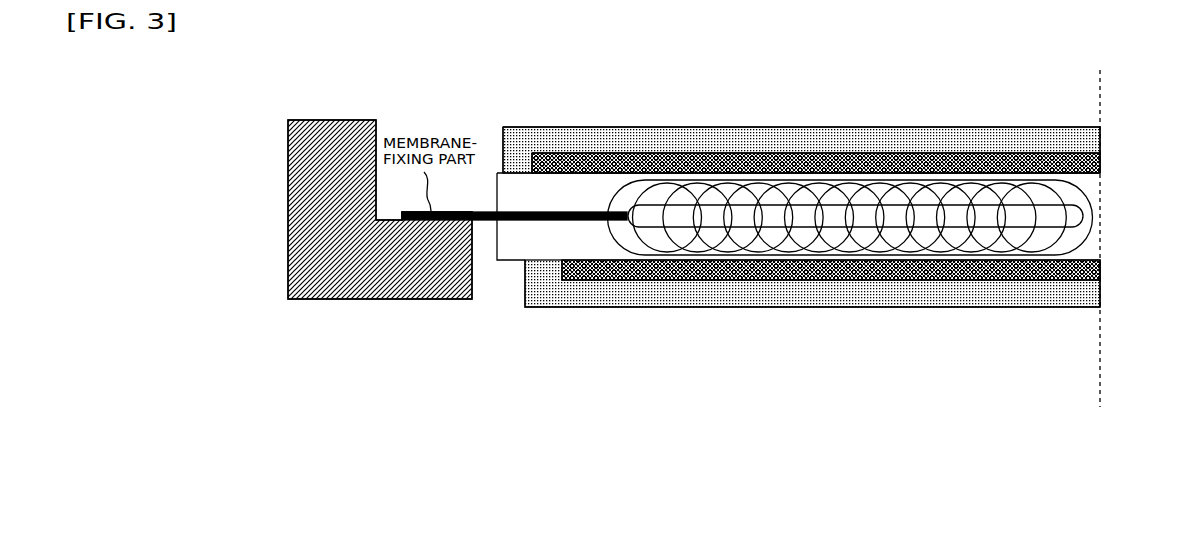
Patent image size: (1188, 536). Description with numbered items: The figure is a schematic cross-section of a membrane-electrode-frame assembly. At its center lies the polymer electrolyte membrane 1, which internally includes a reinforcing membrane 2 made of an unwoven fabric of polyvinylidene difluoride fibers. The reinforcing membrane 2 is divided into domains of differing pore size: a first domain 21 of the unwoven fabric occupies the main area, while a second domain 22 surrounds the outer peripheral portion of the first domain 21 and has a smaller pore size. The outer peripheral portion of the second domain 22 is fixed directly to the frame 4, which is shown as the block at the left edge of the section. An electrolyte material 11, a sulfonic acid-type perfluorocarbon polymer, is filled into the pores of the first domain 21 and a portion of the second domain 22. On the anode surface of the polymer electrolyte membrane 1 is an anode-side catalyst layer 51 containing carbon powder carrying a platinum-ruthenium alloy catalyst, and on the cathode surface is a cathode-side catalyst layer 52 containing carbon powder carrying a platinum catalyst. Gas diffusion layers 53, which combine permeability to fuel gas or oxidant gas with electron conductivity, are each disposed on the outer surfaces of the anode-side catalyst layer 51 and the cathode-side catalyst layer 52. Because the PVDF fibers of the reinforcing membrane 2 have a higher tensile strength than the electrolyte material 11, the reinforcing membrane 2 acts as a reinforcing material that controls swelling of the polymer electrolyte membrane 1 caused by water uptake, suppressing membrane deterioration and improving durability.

The polymer electrolyte membrane 1 is at (844, 216).
The reinforcing membrane 2 is at (800, 208).
The frame 4 is at (320, 128).
The electrolyte material 11 is at (557, 193).
The first domain 21 is at (1095, 312).
The second domain 22 is at (633, 312).
The anode-side catalyst layer 51 is at (1090, 160).
The cathode-side catalyst layer 52 is at (1090, 270).
The gas diffusion layer 53 is at (1090, 137).